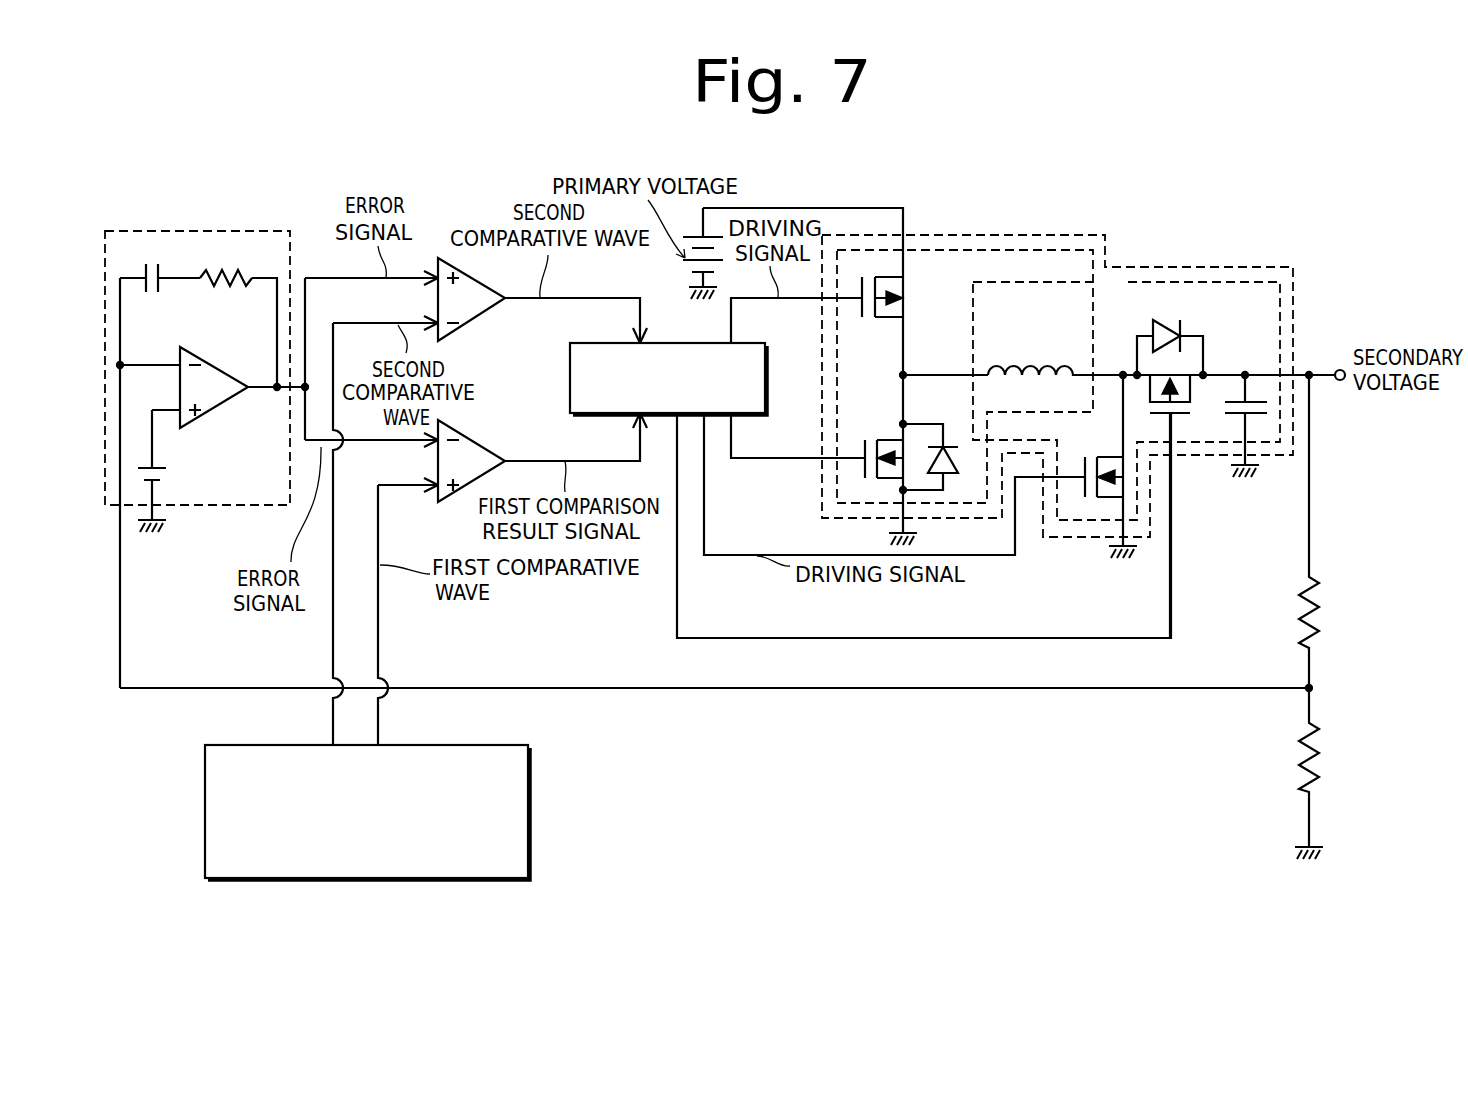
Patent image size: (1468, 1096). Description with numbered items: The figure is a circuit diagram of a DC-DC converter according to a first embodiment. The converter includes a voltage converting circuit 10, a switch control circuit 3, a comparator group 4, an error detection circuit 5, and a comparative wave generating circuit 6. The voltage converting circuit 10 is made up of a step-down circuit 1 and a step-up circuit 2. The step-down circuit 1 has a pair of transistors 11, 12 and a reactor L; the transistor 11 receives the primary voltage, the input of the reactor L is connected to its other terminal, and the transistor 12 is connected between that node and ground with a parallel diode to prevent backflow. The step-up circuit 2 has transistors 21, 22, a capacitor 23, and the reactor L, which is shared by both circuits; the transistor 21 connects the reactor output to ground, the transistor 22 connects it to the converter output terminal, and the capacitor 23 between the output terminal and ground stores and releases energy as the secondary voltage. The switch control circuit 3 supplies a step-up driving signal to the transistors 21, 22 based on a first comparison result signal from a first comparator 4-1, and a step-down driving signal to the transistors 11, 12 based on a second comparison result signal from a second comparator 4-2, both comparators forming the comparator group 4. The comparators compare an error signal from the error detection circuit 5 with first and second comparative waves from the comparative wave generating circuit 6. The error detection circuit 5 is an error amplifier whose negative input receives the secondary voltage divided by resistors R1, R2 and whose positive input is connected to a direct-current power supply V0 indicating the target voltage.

The error detection circuit 5 is at (223, 231).
The comparator group 4 is at (542, 380).
The first comparator 4-1 is at (474, 420).
The second comparator 4-2 is at (468, 341).
The switch control circuit 3 is at (655, 343).
The transistor 11 is at (918, 283).
The transistor 12 is at (884, 413).
The step-down circuit 1 is at (975, 250).
The voltage converting circuit 10 is at (1170, 267).
The step-up circuit 2 is at (1240, 281).
The transistor 22 is at (1184, 356).
The capacitor 23 is at (1222, 450).
The transistor 21 is at (1093, 520).
The comparative wave generating circuit 6 is at (530, 812).
The reactor L is at (1032, 366).
The voltage dividing resistor R1 is at (1325, 531).
The voltage dividing resistor R2 is at (1323, 773).
The direct-current power supply V0 is at (186, 487).